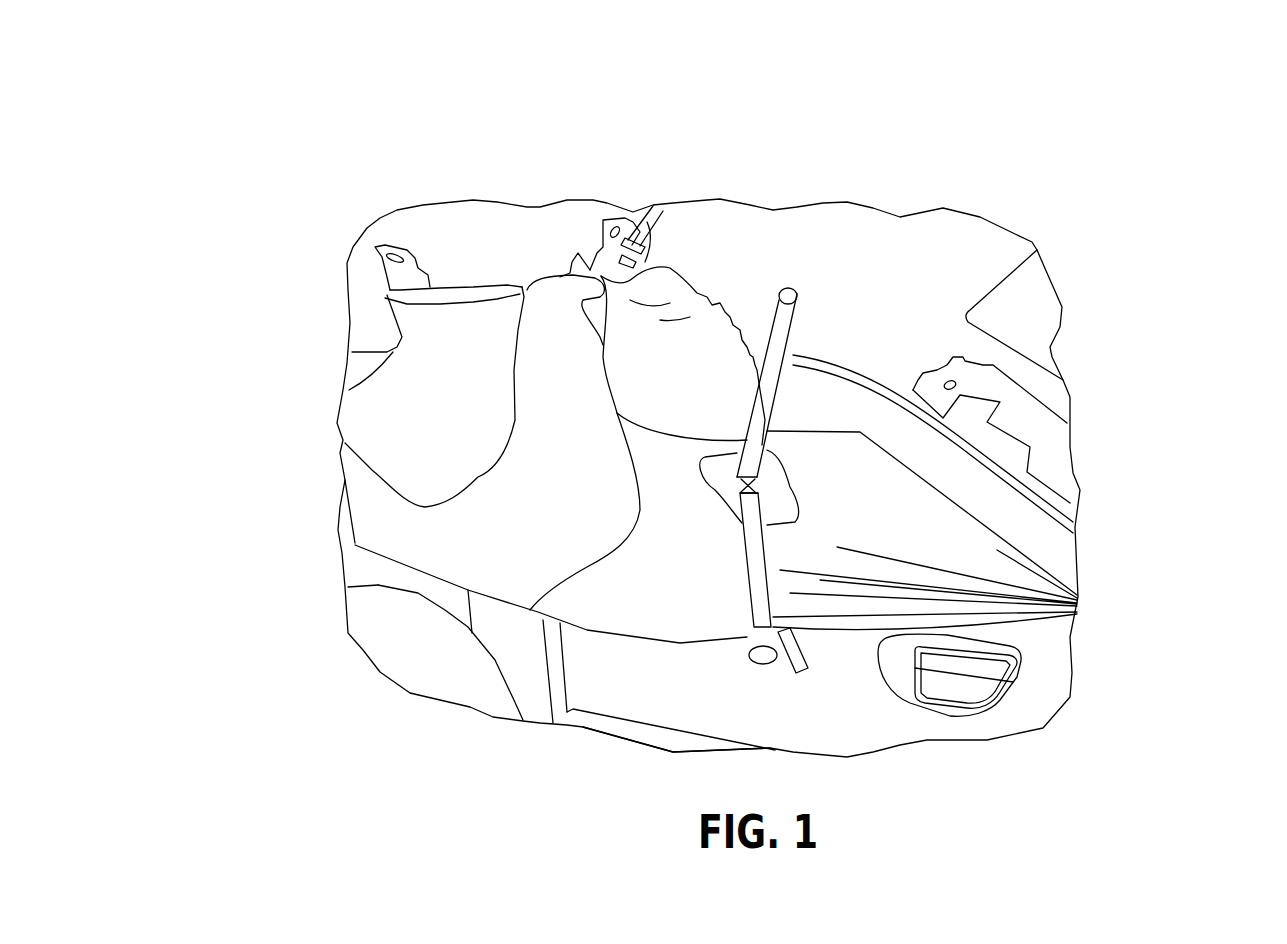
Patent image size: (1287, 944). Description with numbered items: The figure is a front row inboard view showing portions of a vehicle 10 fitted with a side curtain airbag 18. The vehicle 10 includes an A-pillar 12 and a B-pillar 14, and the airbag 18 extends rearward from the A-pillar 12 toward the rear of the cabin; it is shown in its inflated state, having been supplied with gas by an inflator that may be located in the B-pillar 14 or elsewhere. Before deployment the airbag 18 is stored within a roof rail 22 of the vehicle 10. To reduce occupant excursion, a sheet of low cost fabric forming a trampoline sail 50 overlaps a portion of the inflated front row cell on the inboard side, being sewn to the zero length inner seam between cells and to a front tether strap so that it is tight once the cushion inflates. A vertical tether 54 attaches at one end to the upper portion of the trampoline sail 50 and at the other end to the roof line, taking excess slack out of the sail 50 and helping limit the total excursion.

The vehicle 10 is at (1117, 300).
The A-pillar 12 is at (1057, 462).
The B-pillar 14 is at (515, 652).
The side curtain airbag 18 is at (440, 387).
The roof rail 22 is at (750, 299).
The trampoline sail 50 is at (940, 578).
The vertical tether 54 is at (793, 313).